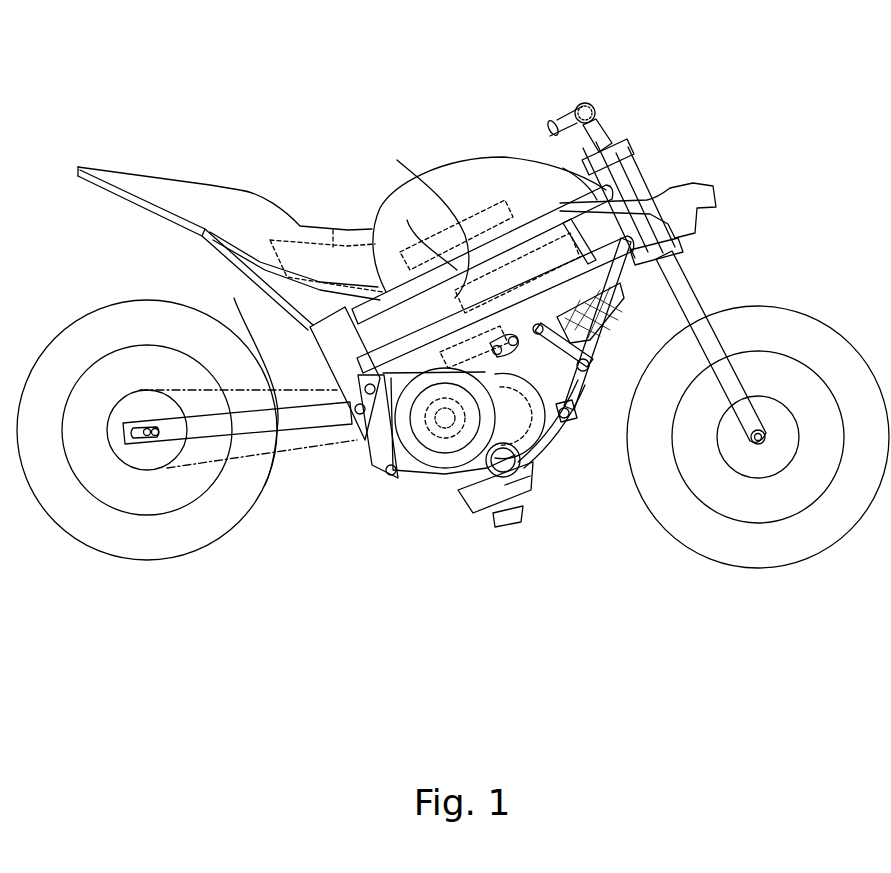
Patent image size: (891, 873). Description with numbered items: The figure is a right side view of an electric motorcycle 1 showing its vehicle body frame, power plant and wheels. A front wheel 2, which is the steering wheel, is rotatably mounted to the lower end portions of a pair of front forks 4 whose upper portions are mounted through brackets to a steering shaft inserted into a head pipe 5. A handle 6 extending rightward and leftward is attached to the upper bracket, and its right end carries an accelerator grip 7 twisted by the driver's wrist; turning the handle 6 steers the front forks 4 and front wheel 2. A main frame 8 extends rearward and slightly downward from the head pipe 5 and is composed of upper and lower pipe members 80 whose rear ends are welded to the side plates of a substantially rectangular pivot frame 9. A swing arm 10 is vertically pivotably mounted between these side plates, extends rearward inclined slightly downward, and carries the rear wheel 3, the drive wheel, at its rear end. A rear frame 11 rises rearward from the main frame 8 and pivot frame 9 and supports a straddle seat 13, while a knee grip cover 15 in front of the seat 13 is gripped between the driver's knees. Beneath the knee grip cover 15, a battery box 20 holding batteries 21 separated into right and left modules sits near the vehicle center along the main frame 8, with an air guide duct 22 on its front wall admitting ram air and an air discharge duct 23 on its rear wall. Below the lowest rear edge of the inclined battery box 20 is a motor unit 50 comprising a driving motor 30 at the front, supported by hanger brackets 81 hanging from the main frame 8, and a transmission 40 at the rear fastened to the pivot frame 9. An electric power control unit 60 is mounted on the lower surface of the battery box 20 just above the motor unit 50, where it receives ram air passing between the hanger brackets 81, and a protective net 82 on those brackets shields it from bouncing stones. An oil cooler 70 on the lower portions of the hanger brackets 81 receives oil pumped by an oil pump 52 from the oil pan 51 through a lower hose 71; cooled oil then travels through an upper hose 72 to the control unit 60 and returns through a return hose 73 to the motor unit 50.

The electric motorcycle 1 is at (749, 97).
The front wheel 2 is at (813, 316).
The rear wheel 3 is at (104, 299).
The front forks 4 is at (707, 302).
The head pipe 5 is at (630, 185).
The handle 6 is at (597, 130).
The accelerator grip 7 is at (567, 117).
The main frame 8 is at (397, 160).
The pivot frame 9 is at (323, 358).
The swing arm 10 is at (249, 405).
The rear frame 11 is at (172, 221).
The straddle seat 13 is at (270, 207).
The knee grip cover 15 is at (397, 193).
The battery box 20 is at (533, 157).
The batteries 21 is at (480, 208).
The air guide duct 22 is at (700, 183).
The air discharge duct 23 is at (333, 228).
The driving motor 30 is at (550, 463).
The transmission 40 is at (430, 463).
The motor unit 50 is at (457, 490).
The oil pan 51 is at (493, 512).
The oil pump 52 is at (520, 495).
The electric power control unit 60 is at (603, 333).
The oil cooler 70 is at (580, 392).
The lower hose 71 is at (563, 453).
The upper hose 72 is at (595, 363).
The return hose 73 is at (430, 322).
The pipe members 80 is at (420, 292).
The hanger brackets 81 is at (675, 258).
The protective net 82 is at (620, 307).